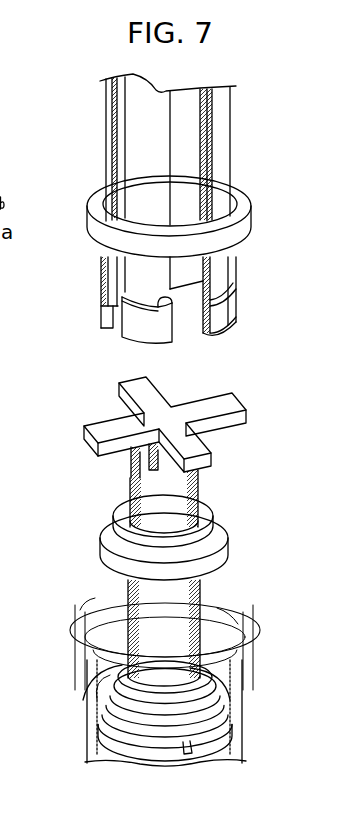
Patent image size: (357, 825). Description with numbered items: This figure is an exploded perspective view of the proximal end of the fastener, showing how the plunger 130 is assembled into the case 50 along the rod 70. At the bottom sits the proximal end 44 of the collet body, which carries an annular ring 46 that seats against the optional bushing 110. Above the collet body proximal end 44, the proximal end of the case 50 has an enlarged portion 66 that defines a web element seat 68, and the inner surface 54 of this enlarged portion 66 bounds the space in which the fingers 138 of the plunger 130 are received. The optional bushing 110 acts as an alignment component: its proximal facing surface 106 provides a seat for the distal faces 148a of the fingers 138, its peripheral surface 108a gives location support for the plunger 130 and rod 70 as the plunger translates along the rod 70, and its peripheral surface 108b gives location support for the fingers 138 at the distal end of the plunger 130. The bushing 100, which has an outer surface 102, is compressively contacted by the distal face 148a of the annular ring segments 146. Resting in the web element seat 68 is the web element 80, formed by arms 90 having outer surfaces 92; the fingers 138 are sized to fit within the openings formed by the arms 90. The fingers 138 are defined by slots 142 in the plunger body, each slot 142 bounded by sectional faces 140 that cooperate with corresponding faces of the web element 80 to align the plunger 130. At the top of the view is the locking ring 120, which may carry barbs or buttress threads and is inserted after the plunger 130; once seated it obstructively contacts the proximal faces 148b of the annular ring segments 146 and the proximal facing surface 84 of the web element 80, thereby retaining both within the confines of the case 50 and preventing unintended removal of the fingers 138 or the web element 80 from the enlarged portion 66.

The proximal end 44 is at (206, 691).
The annular ring 46 is at (100, 681).
The case 50 is at (80, 738).
The inner surface 54 is at (98, 590).
The enlarged portion 66 is at (160, 651).
The web element seat 68 is at (100, 619).
The rod 70 is at (208, 500).
The web element 80 is at (170, 411).
The proximal facing surface 84 is at (170, 425).
The arms 90 is at (99, 418).
The outer surfaces 92 is at (130, 378).
The bushing 100 is at (178, 539).
The outer surface 102 is at (169, 540).
The proximal facing surface 106 is at (101, 531).
The peripheral surface 108a is at (227, 556).
The peripheral surface 108b is at (226, 526).
The optional bushing 110 is at (231, 709).
The locking ring 120 is at (254, 188).
The plunger 130 is at (167, 131).
The fingers 138 is at (153, 103).
The sectional faces 140 is at (110, 163).
The slots 142 is at (120, 88).
The annular ring segments 146 is at (89, 274).
The distal face 148a is at (100, 326).
The proximal face 148b is at (104, 266).